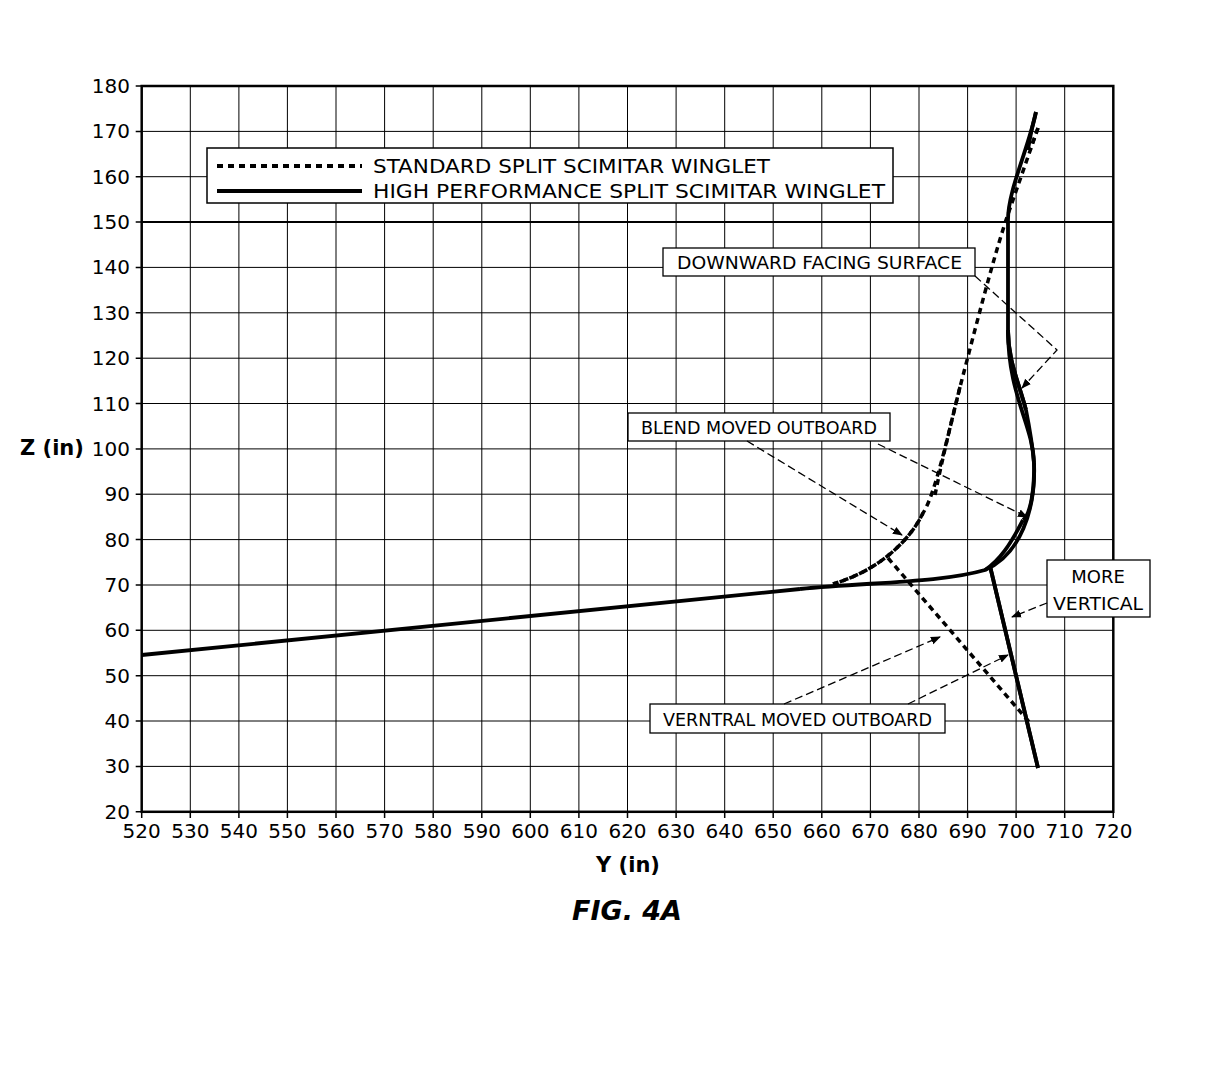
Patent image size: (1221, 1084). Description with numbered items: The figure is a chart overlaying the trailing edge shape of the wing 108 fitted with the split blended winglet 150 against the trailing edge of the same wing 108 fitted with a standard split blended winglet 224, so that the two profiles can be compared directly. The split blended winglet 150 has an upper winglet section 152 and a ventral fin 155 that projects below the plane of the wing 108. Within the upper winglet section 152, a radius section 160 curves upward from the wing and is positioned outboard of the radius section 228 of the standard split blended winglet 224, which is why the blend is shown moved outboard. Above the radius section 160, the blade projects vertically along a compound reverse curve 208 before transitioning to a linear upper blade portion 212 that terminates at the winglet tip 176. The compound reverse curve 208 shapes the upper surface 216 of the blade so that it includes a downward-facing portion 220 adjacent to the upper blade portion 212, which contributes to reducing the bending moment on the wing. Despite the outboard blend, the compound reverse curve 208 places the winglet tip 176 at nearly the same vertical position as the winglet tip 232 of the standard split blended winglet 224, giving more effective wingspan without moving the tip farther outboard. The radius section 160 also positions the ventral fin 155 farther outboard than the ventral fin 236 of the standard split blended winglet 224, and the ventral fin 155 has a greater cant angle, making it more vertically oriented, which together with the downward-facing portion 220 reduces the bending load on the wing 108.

The second wing 108 is at (377, 628).
The split blended winglet 150 is at (1086, 517).
The upper winglet section 152 is at (1022, 397).
The ventral fin 155 is at (1020, 665).
The radius section 160 is at (1013, 543).
The winglet tip 176 is at (1035, 112).
The compound reverse curve 208 is at (1046, 430).
The linear upper blade portion 212 is at (1026, 152).
The upper surface 216 is at (1033, 460).
The downward-facing portion 220 is at (1013, 378).
The standard split blended winglet 224 is at (932, 348).
The radius section of the standard split blended winglet 228 is at (922, 515).
The winglet tip of the standard split blended winglet 232 is at (1040, 130).
The ventral fin of the standard split blended winglet 236 is at (995, 678).